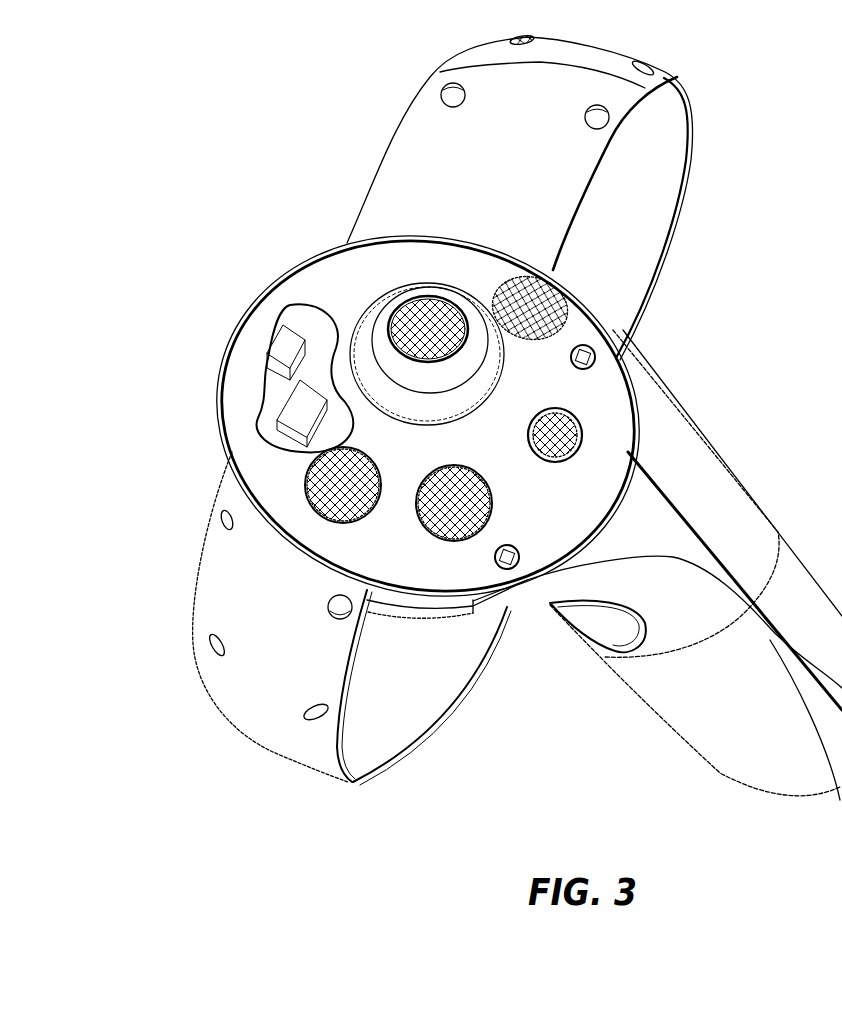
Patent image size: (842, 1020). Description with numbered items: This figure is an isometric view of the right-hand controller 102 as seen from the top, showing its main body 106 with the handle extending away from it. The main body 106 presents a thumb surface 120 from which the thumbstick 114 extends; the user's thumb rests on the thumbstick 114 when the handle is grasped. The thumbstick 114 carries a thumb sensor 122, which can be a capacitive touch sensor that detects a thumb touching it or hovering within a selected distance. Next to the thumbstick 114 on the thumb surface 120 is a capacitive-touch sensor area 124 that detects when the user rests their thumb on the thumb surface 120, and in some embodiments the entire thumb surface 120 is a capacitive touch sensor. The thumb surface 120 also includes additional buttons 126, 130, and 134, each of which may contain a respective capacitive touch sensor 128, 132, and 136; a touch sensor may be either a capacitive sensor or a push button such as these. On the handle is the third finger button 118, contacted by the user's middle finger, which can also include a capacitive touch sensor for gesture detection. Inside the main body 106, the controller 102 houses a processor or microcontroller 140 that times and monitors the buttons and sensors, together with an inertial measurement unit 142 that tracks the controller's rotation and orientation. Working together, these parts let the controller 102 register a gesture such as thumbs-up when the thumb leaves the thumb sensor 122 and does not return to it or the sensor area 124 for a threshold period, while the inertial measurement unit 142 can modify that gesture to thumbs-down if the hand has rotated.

The right-hand controller 102 is at (752, 109).
The main body 106 is at (236, 311).
The thumbstick 114 is at (393, 300).
The third finger button 118 is at (597, 622).
The thumb surface 120 is at (583, 397).
The thumb sensor 122 is at (428, 325).
The capacitive-touch sensor area 124 is at (535, 303).
The button 126 is at (343, 483).
The capacitive touch sensor 128 is at (453, 510).
The button 130 is at (342, 497).
The capacitive touch sensor 132 is at (470, 515).
The button 134 is at (583, 422).
The capacitive touch sensor 136 is at (567, 437).
The processor or microcontroller 140 is at (277, 402).
The inertial measurement unit (IMU) 142 is at (270, 342).